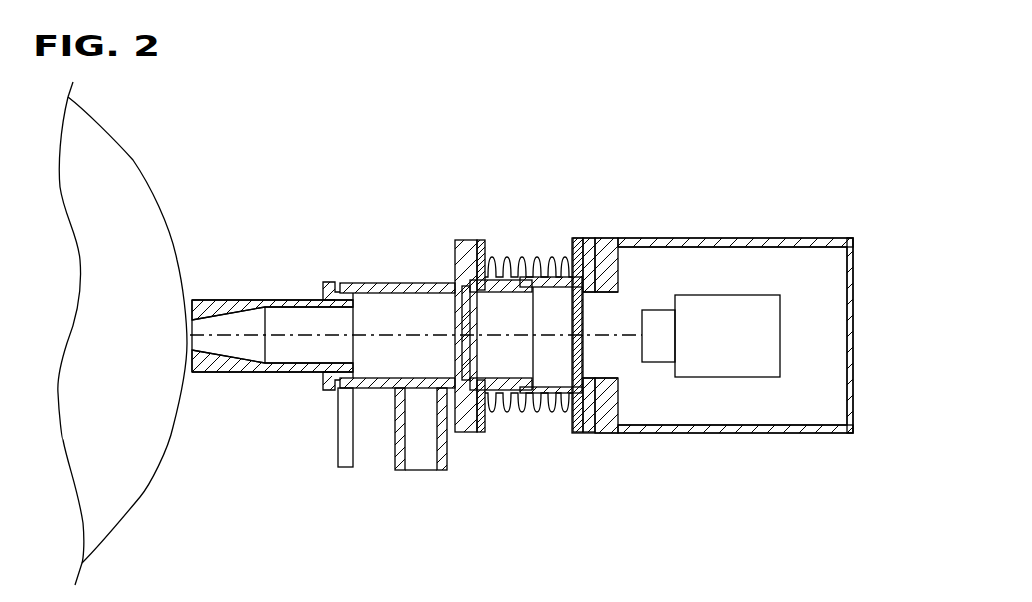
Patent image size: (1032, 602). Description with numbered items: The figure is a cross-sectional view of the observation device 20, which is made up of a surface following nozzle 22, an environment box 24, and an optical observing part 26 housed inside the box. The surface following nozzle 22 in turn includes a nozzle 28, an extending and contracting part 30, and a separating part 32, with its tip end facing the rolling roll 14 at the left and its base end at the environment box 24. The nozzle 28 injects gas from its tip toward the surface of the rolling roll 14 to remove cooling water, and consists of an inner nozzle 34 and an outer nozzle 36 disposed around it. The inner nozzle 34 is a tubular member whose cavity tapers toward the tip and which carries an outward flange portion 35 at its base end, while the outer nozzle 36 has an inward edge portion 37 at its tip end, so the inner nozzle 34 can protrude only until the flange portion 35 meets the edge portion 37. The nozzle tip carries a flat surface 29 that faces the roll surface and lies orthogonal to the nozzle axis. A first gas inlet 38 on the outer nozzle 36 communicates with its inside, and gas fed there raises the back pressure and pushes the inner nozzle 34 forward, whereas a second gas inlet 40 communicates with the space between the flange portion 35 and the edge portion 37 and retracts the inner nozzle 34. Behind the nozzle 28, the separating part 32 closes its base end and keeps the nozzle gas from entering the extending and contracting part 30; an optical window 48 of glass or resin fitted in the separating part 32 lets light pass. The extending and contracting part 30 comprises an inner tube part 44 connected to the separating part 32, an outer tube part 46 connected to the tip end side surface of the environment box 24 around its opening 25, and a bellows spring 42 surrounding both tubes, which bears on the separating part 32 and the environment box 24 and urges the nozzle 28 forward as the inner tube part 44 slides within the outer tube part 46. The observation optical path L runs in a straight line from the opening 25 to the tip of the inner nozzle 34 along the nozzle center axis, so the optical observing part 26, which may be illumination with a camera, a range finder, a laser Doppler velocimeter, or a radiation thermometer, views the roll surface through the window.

The rolling roll 14 is at (130, 490).
The observation device 20 is at (815, 195).
The surface following nozzle 22 is at (459, 218).
The environment box 24 is at (738, 238).
The opening 25 is at (605, 310).
The optical observing part 26 is at (784, 340).
The nozzle 28 is at (353, 270).
The flat surface 29 is at (178, 358).
The extending and contracting part 30 is at (527, 246).
The separating part 32 is at (467, 440).
The inner nozzle 34 is at (250, 300).
The flange portion 35 is at (335, 290).
The outer nozzle 36 is at (368, 284).
The edge portion 37 is at (322, 382).
The first gas inlet 38 is at (400, 452).
The second gas inlet 40 is at (338, 430).
The bellows spring 42 is at (532, 400).
The inner tube part 44 is at (507, 360).
The outer tube part 46 is at (566, 365).
The optical window 48 is at (460, 315).
The observation optical path L is at (225, 332).